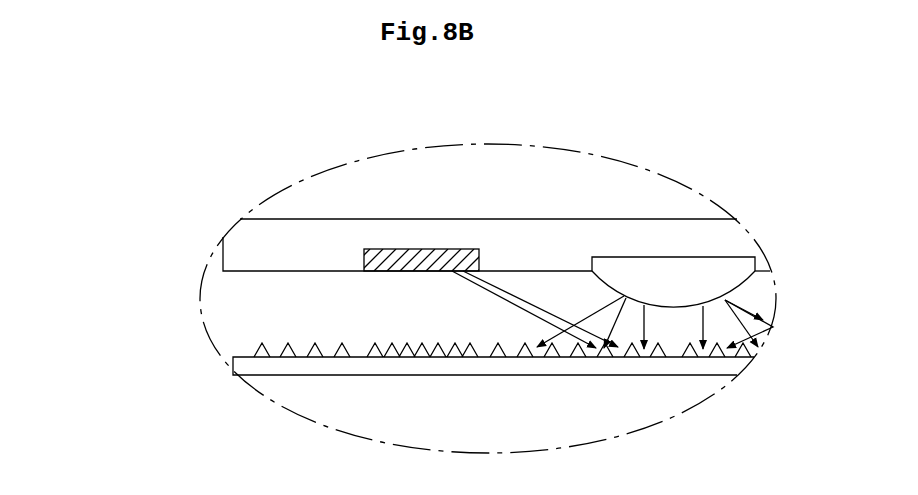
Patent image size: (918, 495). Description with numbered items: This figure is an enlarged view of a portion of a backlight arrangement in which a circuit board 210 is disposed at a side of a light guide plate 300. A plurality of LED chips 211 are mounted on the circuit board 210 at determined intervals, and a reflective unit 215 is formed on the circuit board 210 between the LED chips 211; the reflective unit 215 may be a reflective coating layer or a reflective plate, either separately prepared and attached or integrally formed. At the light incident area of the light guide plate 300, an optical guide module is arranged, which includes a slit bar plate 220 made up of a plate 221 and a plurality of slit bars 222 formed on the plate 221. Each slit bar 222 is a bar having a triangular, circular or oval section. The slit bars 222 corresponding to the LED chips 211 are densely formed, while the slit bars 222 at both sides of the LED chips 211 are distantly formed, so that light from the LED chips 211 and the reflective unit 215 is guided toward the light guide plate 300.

The circuit board 210 is at (532, 237).
The LED chip 211 is at (422, 258).
The reflective unit 215 is at (671, 270).
The slit bar plate 220 is at (416, 343).
The plate 221 is at (245, 366).
The slit bar 222 is at (258, 345).
The light guide plate 300 is at (320, 402).